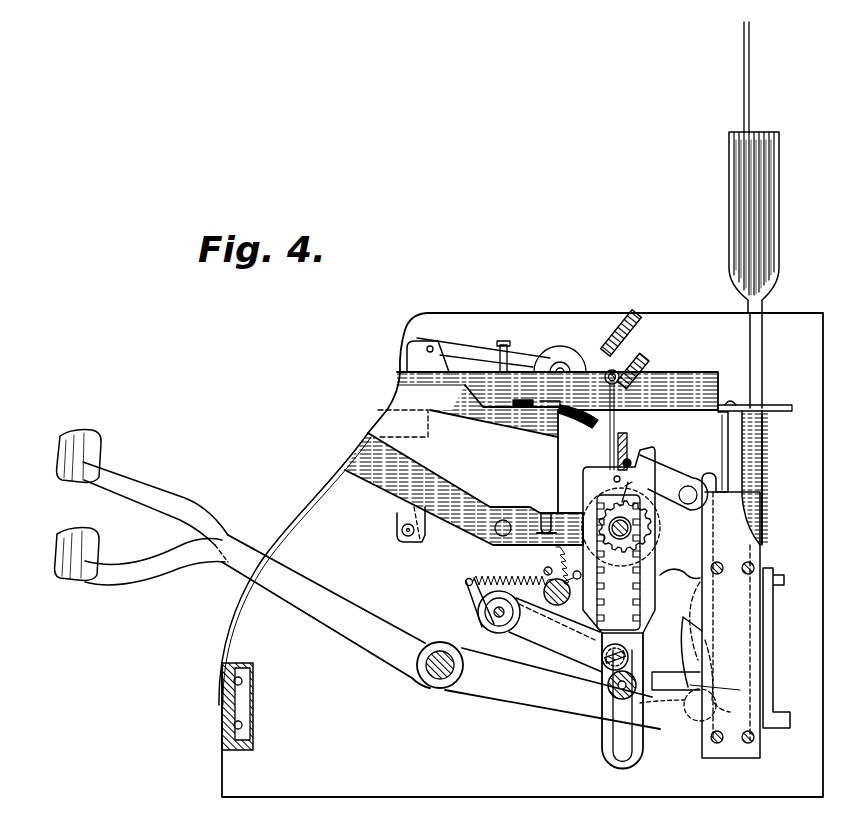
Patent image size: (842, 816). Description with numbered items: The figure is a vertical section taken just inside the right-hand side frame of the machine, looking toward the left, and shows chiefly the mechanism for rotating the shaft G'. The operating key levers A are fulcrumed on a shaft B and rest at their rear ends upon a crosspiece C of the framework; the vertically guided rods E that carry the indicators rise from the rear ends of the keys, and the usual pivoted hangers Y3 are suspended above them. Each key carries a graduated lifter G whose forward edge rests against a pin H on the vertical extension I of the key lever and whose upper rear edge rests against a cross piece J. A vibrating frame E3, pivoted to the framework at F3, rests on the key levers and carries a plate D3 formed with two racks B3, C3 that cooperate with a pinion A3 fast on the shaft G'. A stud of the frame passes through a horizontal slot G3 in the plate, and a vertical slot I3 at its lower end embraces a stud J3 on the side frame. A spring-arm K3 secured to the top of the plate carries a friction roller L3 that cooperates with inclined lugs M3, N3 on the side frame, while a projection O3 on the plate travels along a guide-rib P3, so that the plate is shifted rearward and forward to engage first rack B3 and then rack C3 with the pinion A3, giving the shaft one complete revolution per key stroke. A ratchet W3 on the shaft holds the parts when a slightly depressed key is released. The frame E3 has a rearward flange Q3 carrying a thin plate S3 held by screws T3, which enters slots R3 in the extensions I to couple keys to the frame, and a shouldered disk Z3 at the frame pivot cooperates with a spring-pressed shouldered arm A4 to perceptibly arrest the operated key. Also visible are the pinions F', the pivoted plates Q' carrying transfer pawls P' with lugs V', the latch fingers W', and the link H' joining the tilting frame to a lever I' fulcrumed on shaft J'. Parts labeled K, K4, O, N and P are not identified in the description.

The pinions F' is at (723, 167).
The plates Q' is at (428, 345).
The transfer pawls P' is at (483, 342).
The lugs V' is at (510, 344).
The fingers W' is at (560, 350).
The inclined lug N3 is at (640, 324).
The inclined lug M3 is at (650, 362).
The friction roller L3 is at (616, 375).
The rods E is at (748, 344).
The screws T3 is at (618, 578).
The plate D3 is at (602, 467).
The rotary shaft G' is at (643, 528).
The ratchet W3 is at (662, 527).
The spring-arm K3 is at (628, 441).
The guide-rib P3 is at (632, 462).
The cross piece J is at (688, 447).
The projection O3 is at (613, 479).
The pinion A3 is at (632, 483).
The lever K is at (688, 494).
The link H' is at (385, 520).
The lever I' is at (444, 553).
The shaft J' is at (500, 542).
The pivot F3 is at (463, 588).
The rack C3 is at (575, 625).
The shouldered disk Z3 is at (505, 636).
The shouldered arm A4 is at (480, 612).
The key levers A is at (355, 608).
The shaft B is at (440, 690).
The vibrating frame E3 is at (577, 670).
The vertical slot I3 is at (618, 729).
The pin K4 is at (628, 652).
The crosspiece C is at (736, 750).
The pivoted hangers Y3 is at (773, 622).
The rack B3 is at (650, 572).
The pawl O is at (694, 580).
The lever N is at (718, 562).
The lever P is at (728, 593).
The graduated plates or lifters G is at (681, 644).
The pins H is at (722, 664).
The vertical extensions I is at (726, 655).
The horizontal slot G3 is at (688, 630).
The thin plate S3 is at (660, 680).
The flange Q3 is at (700, 665).
The slots R3 is at (715, 688).
The stud J3 is at (684, 702).